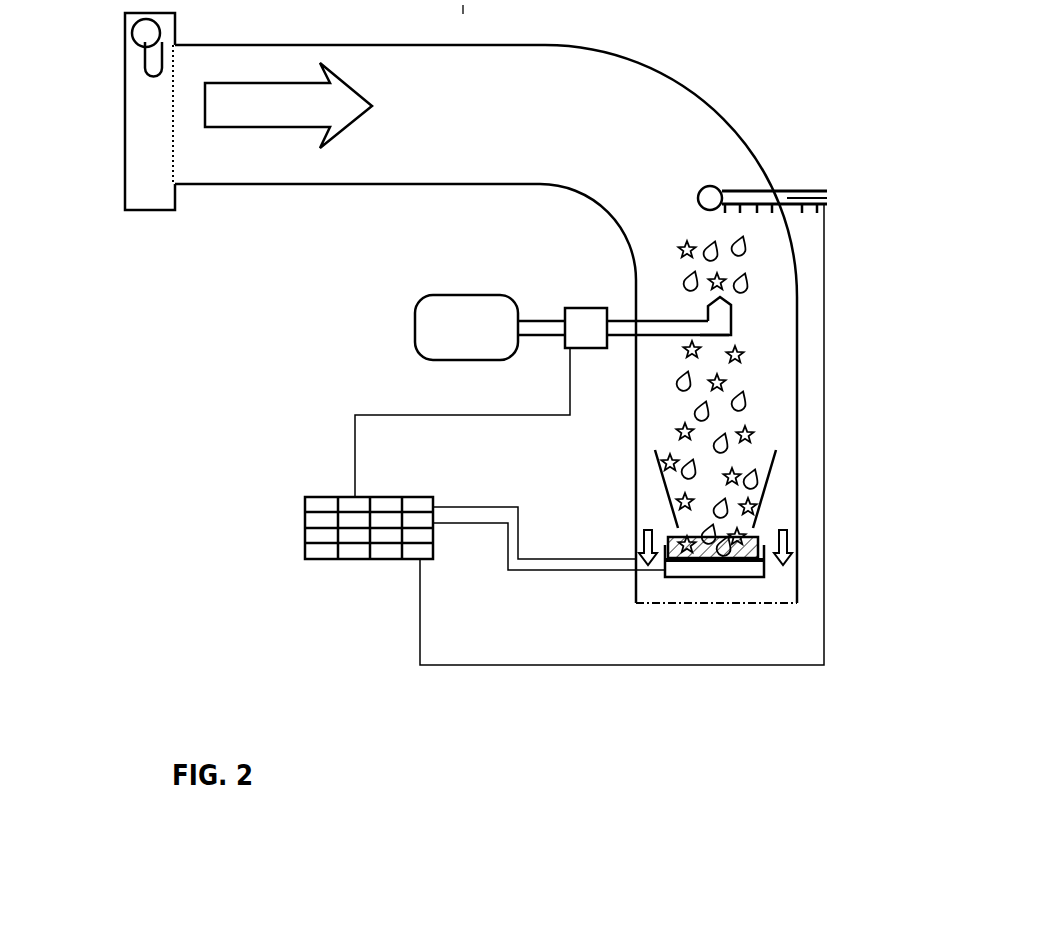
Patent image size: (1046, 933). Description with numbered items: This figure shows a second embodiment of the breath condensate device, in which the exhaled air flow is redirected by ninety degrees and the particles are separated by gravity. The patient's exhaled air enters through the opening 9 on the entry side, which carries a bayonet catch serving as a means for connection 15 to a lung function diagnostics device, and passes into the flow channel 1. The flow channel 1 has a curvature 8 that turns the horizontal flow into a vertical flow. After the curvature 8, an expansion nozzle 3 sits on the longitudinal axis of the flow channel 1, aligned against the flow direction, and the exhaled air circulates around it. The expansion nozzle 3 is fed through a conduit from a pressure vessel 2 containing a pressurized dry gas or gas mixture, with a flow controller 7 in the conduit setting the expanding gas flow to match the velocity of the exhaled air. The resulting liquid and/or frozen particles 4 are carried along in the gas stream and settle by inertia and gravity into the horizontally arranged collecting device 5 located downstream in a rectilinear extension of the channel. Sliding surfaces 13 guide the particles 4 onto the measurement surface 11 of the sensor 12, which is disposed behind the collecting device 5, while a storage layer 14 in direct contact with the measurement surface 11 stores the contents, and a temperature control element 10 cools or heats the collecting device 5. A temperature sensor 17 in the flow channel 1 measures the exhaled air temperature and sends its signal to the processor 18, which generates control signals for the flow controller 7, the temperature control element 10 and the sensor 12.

The flow channel 1 is at (277, 157).
The pressure vessel 2 is at (455, 325).
The expansion nozzle 3 is at (723, 308).
The liquid and/or frozen particles 4 is at (728, 424).
The collecting device 5 is at (763, 549).
The flow controller 7 is at (583, 333).
The curvature 8 is at (657, 120).
The opening on the entry side 9 is at (117, 117).
The temperature control element 10 is at (640, 560).
The measurement surface of the sensor 11 is at (667, 567).
The sensor 12 is at (765, 570).
The sliding surfaces 13 is at (657, 471).
The storage layer 14 is at (758, 538).
The means for connection 15 is at (152, 45).
The temperature sensor 17 is at (800, 187).
The processor 18 is at (330, 552).